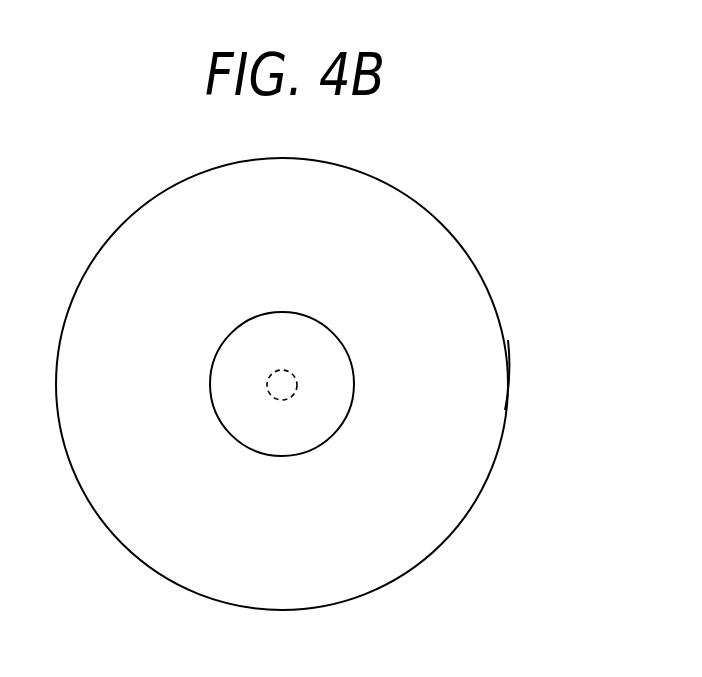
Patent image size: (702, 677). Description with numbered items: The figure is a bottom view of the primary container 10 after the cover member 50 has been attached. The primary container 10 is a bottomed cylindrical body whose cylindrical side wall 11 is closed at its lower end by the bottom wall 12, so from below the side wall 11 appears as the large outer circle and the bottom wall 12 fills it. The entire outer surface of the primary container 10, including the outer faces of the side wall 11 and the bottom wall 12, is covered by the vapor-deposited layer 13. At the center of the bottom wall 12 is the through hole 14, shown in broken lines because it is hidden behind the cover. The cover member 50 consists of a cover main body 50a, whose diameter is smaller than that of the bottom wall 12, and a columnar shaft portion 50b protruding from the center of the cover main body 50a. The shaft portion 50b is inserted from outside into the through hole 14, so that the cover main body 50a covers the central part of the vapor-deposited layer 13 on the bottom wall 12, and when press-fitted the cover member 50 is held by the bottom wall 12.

The primary container 10 is at (495, 302).
The side wall 11 is at (508, 357).
The bottom wall 12 is at (435, 510).
The vapor-deposited layer 13 is at (458, 445).
The through hole 14 is at (274, 372).
The cover member 50 is at (213, 402).
The cover main body 50a is at (257, 432).
The shaft portion 50b is at (292, 372).